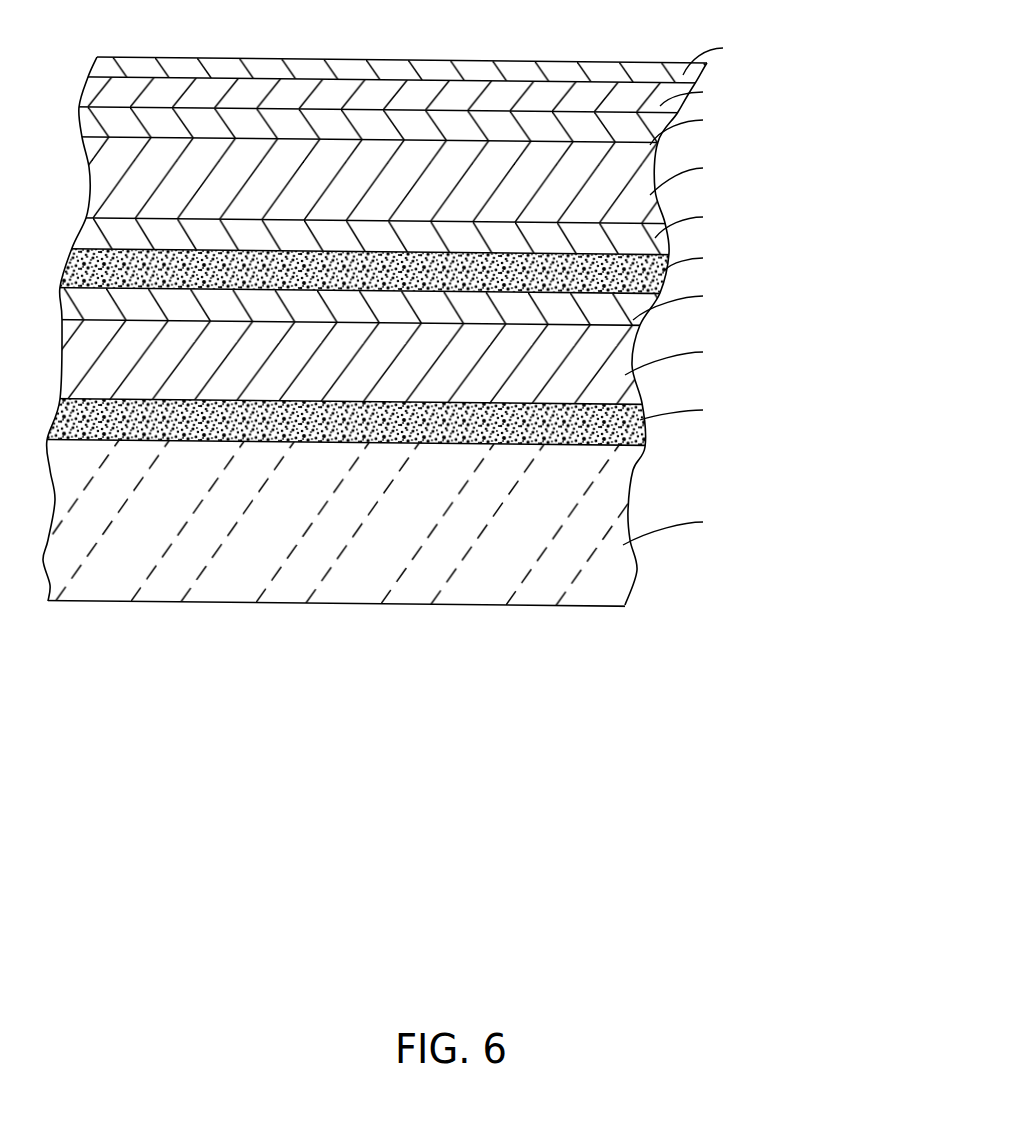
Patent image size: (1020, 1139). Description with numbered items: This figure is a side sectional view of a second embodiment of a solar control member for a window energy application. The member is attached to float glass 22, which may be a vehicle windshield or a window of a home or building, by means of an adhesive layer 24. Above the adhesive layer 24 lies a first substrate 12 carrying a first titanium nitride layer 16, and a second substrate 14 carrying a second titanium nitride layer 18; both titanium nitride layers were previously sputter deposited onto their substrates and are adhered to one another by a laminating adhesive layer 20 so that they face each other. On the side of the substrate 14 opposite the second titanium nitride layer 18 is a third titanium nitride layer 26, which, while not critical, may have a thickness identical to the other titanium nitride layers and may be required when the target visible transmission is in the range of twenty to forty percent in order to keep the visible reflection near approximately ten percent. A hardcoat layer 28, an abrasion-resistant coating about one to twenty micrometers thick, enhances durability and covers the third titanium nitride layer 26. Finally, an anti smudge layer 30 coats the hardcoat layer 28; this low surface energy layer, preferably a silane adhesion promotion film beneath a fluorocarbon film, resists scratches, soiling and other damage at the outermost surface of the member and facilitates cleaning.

The anti smudge layer 30 is at (187, 60).
The hardcoat layer 28 is at (95, 97).
The third titanium nitride layer 26 is at (87, 130).
The second substrate 14 is at (95, 192).
The second titanium nitride layer 18 is at (95, 237).
The laminating adhesive layer 20 is at (63, 275).
The first titanium nitride layer 16 is at (67, 315).
The first substrate 12 is at (67, 372).
The adhesive layer 24 is at (52, 420).
The float glass 22 is at (217, 592).